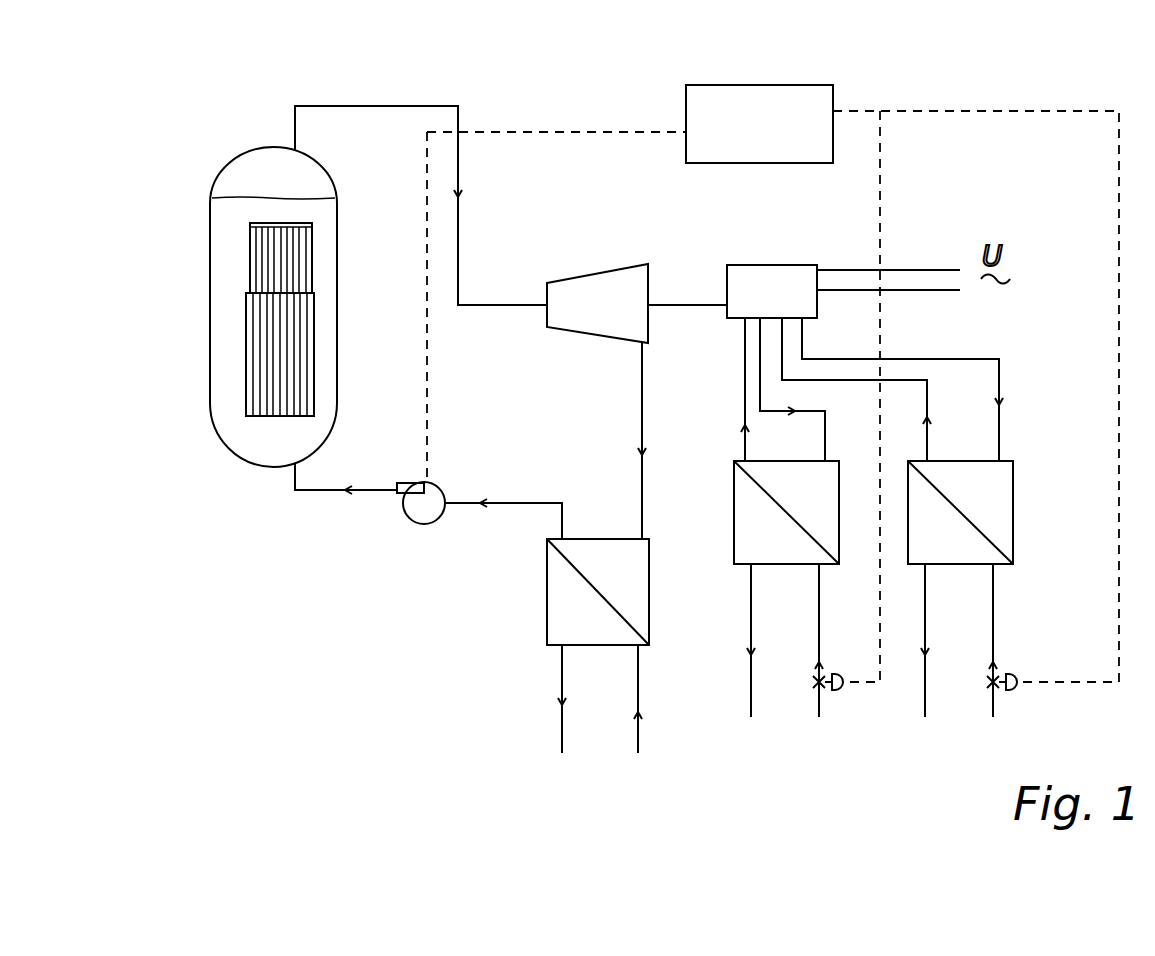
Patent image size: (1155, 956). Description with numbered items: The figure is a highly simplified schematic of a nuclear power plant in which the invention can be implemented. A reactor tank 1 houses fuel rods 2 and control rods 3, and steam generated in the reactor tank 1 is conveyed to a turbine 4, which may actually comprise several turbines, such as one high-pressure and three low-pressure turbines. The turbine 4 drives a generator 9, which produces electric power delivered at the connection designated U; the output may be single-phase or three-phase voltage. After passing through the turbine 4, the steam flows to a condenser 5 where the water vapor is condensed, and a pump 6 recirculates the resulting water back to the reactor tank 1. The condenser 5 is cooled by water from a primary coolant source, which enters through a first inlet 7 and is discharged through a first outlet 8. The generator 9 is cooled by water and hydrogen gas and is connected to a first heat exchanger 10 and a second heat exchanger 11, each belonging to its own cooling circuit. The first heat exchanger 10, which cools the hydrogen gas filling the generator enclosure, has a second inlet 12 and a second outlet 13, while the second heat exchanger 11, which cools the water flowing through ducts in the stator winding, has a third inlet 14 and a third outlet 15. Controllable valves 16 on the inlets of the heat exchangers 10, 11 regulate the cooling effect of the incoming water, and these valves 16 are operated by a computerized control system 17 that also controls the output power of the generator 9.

The reactor tank 1 is at (222, 441).
The fuel rods 2 is at (250, 270).
The control rods 3 is at (246, 357).
The turbine 4 is at (598, 273).
The condenser 5 is at (547, 591).
The pump 6 is at (413, 523).
The first inlet 7 is at (638, 646).
The first outlet 8 is at (560, 647).
The generator 9 is at (773, 265).
The first heat exchanger 10 is at (840, 520).
The second heat exchanger 11 is at (1013, 520).
The second inlet 12 is at (822, 564).
The second outlet 13 is at (756, 565).
The third inlet 14 is at (996, 564).
The third outlet 15 is at (930, 565).
The controllable valves 16 is at (837, 689).
The computerized control system 17 is at (764, 85).